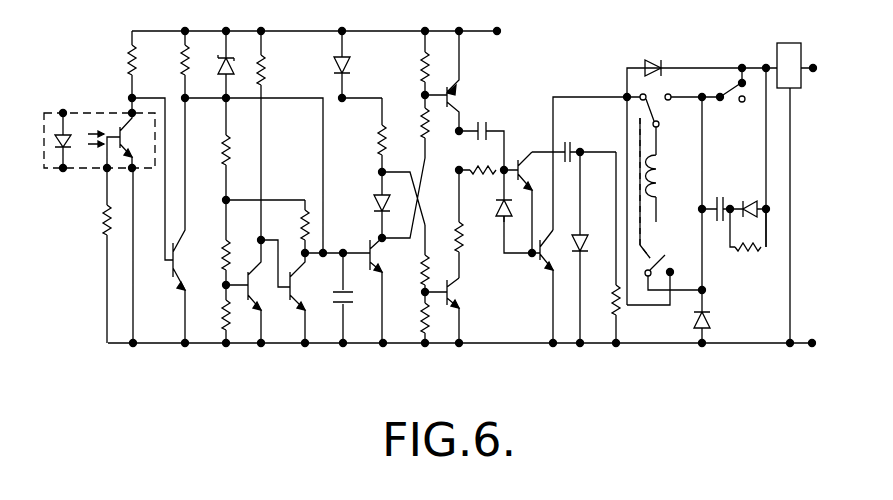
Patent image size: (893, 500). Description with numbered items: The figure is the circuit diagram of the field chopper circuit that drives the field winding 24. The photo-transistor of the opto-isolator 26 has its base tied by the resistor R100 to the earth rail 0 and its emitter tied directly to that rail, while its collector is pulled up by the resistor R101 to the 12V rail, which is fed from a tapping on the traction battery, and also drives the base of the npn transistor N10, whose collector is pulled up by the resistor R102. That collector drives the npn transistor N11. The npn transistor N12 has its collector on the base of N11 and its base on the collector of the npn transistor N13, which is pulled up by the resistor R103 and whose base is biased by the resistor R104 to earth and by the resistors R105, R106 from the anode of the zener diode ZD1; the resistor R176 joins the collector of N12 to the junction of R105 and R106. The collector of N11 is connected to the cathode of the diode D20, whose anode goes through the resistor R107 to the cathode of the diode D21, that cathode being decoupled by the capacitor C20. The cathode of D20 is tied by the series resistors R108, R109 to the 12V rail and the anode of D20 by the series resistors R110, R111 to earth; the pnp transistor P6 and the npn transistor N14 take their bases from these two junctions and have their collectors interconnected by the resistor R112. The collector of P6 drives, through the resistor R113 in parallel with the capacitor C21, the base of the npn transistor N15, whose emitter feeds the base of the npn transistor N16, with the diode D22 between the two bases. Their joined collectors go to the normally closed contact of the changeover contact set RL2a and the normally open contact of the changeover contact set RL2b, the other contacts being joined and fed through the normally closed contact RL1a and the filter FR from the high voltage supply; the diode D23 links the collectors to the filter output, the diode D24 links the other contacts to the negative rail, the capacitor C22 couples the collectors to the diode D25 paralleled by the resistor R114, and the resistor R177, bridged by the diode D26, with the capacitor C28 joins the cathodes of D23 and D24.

The opto-isolator 26 is at (104, 112).
The field winding 24 is at (673, 173).
The resistor R100 is at (103, 222).
The resistor R101 is at (130, 62).
The resistor R102 is at (182, 57).
The resistor R103 is at (264, 68).
The resistor R104 is at (213, 311).
The resistor R105 is at (236, 246).
The resistor R106 is at (217, 152).
The resistor R107 is at (378, 142).
The resistor R108 is at (431, 128).
The resistor R109 is at (419, 70).
The resistor R110 is at (430, 262).
The resistor R111 is at (421, 308).
The resistor R112 is at (465, 236).
The resistor R113 is at (483, 186).
The resistor R114 is at (620, 300).
The resistor R176 is at (299, 237).
The resistor R177 is at (756, 252).
The zener diode ZD1 is at (220, 74).
The diode D20 is at (378, 195).
The diode D21 is at (351, 67).
The diode D22 is at (525, 212).
The diode D23 is at (644, 61).
The diode D24 is at (712, 315).
The diode D25 is at (585, 230).
The diode D26 is at (752, 199).
The capacitor C20 is at (357, 305).
The capacitor C21 is at (491, 122).
The capacitor C22 is at (570, 143).
The capacitor C28 is at (718, 222).
The npn transistor N10 is at (185, 258).
The npn transistor N11 is at (398, 290).
The npn transistor N12 is at (298, 290).
The npn transistor N13 is at (265, 297).
The npn transistor N14 is at (462, 297).
The npn transistor N15 is at (527, 170).
The npn transistor N16 is at (549, 254).
The pnp transistor P6 is at (460, 93).
The normally closed contact RL1a is at (738, 104).
The changeover contact set RL2a is at (659, 96).
The changeover contact set RL2b is at (667, 270).
The filter FR is at (789, 65).
The +12v rail 12V is at (521, 33).
The ground terminal 0 is at (808, 362).